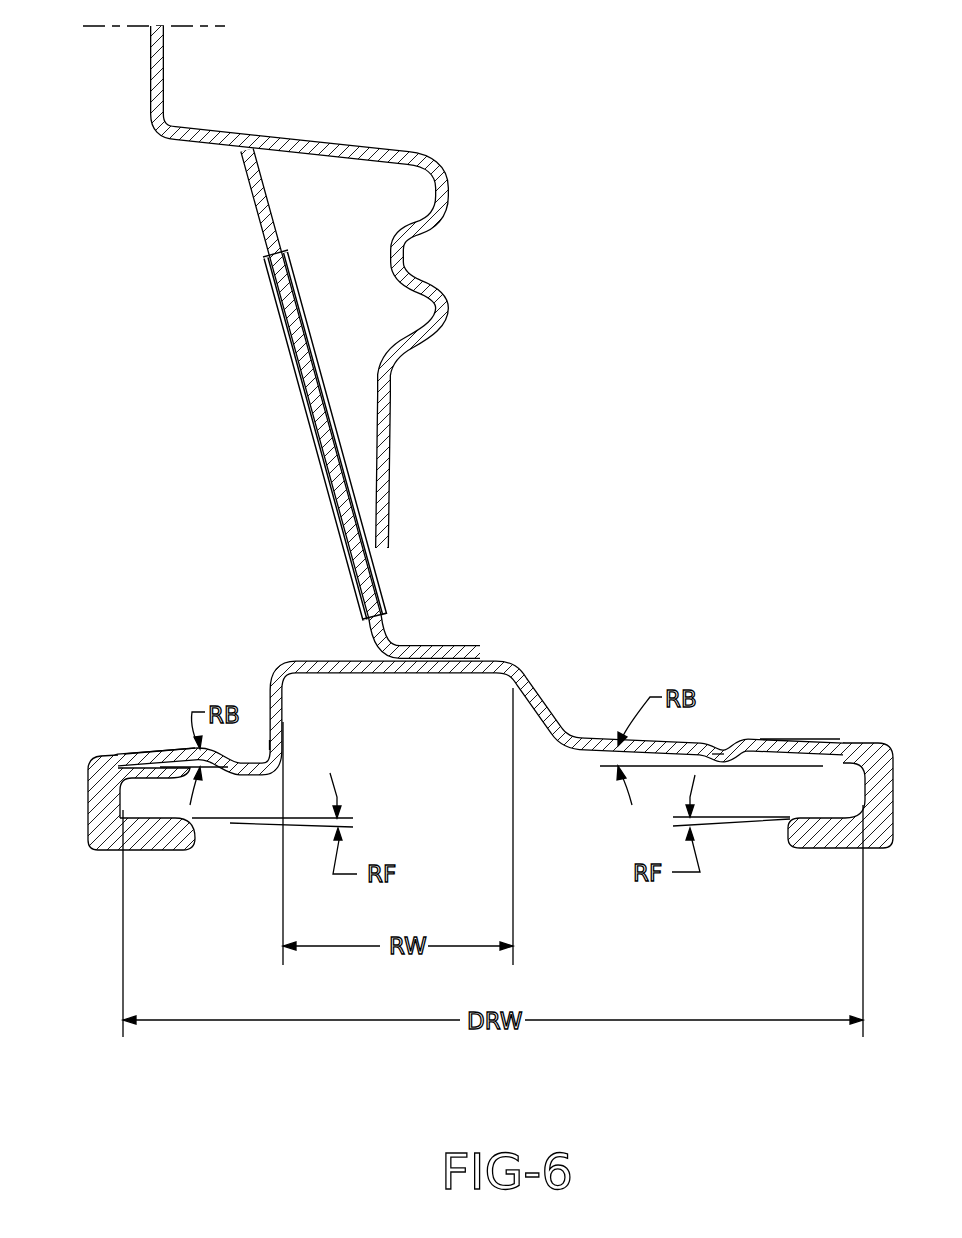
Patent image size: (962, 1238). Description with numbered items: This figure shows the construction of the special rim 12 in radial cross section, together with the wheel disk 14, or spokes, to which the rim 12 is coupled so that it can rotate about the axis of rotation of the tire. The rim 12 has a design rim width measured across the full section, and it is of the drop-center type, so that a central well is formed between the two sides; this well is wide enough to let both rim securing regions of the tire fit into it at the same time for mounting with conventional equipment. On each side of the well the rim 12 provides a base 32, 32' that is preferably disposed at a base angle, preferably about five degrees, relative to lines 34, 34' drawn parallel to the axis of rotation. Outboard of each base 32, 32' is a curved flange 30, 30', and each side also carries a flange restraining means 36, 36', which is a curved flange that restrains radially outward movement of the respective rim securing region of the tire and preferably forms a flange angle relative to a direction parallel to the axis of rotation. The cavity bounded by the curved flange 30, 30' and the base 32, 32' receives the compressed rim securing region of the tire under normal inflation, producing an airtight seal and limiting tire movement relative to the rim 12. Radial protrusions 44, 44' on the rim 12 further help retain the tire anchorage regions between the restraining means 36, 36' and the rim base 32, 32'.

The rim 12 is at (507, 718).
The wheel disk 14 is at (387, 630).
The curved flange 30 is at (160, 742).
The base of the rim 32 is at (160, 704).
The line parallel to the axis of rotation 34 is at (136, 777).
The flange restraining means 36 is at (178, 866).
The radial protrusion 44 is at (327, 743).
The curved flange 30' is at (817, 745).
The base of the rim 32' is at (828, 727).
The line parallel to the axis of rotation 34' is at (826, 755).
The flange restraining means 36' is at (803, 858).
The radial protrusion 44' is at (753, 782).